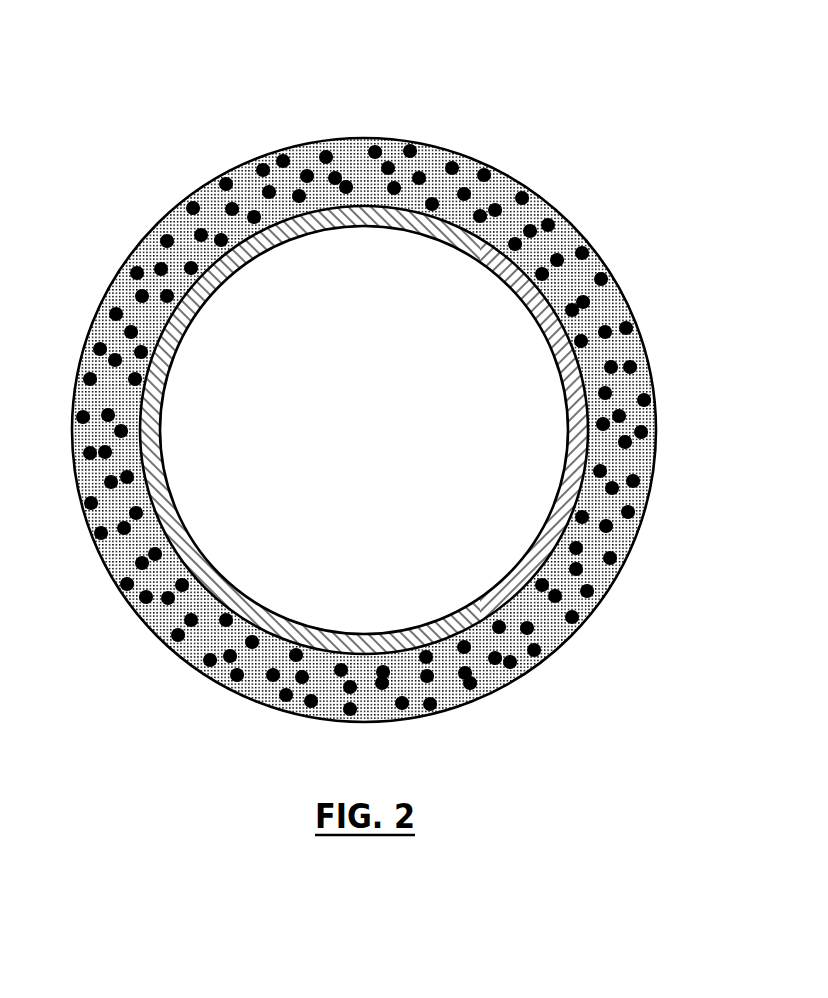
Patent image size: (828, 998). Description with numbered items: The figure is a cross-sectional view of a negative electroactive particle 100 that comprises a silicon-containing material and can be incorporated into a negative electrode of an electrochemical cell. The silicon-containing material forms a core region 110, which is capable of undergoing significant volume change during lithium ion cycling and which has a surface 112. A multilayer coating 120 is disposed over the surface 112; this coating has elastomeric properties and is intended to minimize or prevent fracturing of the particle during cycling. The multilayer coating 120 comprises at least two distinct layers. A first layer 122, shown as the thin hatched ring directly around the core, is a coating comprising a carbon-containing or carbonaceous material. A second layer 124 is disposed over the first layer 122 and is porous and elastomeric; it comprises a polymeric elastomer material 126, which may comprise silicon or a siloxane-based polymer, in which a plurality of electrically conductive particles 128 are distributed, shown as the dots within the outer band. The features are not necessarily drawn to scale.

The negative electroactive particle 100 is at (198, 84).
The core region 110 is at (381, 433).
The surface 112 is at (322, 208).
The multilayer coating 120 is at (372, 412).
The first layer 122 is at (483, 262).
The second layer 124 is at (520, 182).
The polymeric elastomer material 126 is at (568, 243).
The electrically conductive particles 128 is at (603, 305).